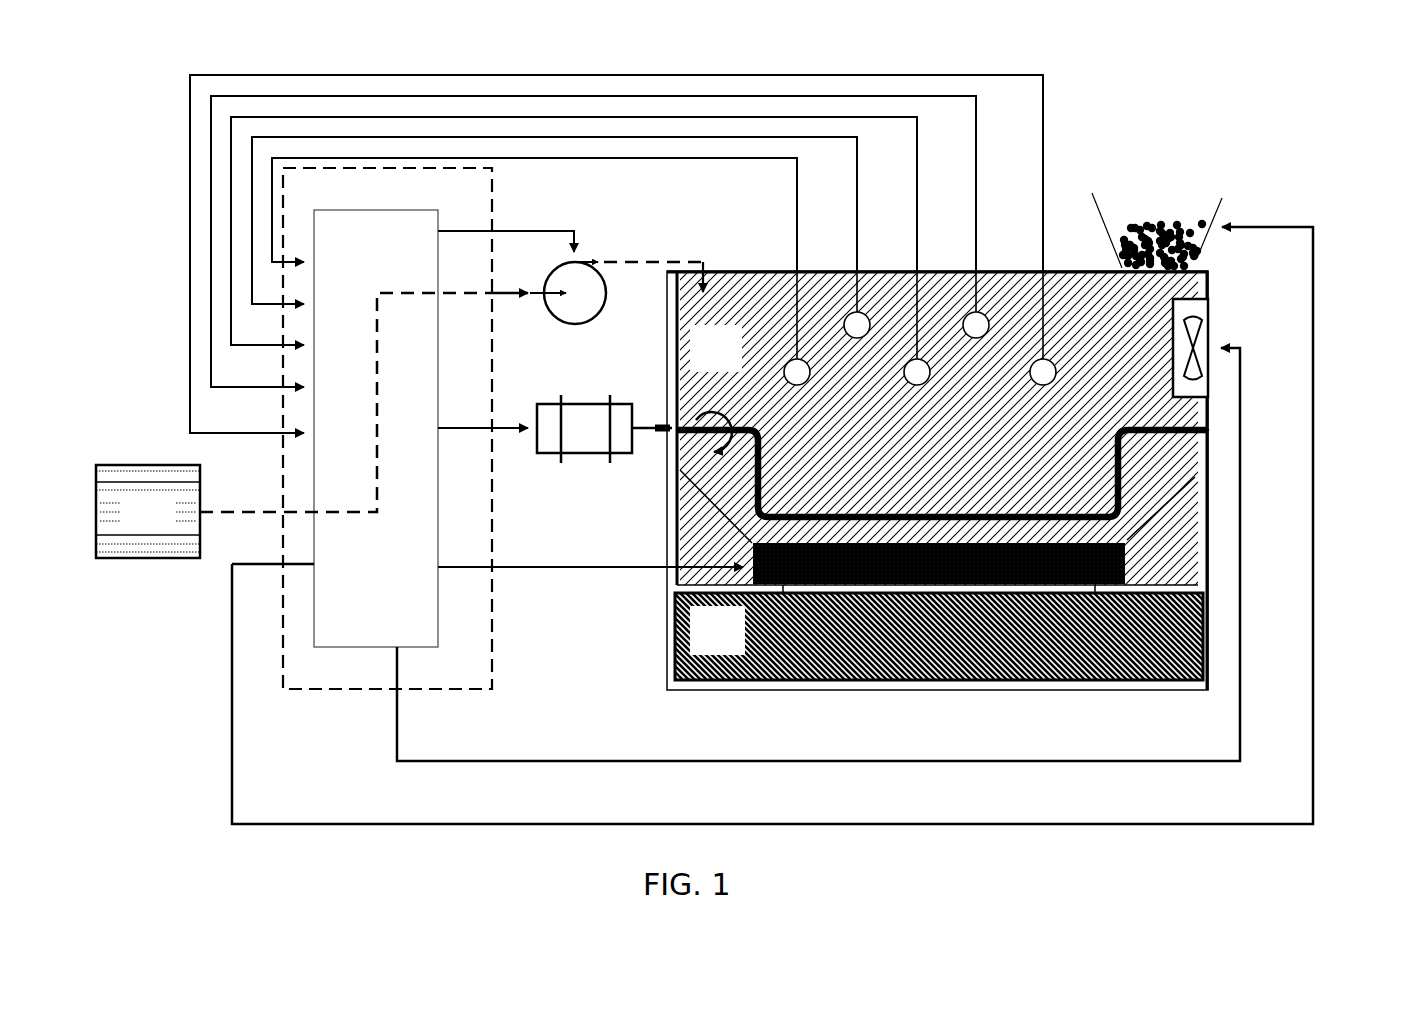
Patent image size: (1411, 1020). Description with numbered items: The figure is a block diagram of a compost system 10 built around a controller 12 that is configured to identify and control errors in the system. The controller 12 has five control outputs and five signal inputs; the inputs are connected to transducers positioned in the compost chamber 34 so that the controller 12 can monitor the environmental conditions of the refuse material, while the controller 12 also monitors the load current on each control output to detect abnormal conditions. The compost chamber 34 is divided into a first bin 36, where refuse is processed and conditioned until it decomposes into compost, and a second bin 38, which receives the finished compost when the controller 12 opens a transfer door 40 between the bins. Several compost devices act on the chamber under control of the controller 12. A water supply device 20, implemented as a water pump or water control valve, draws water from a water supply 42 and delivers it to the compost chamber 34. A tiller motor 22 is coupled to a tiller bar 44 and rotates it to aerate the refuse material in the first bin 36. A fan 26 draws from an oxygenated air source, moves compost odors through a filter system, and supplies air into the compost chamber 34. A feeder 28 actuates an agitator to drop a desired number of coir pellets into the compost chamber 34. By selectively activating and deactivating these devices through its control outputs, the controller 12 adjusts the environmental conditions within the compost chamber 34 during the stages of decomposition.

The compost system 10 is at (1154, 85).
The controller 12 is at (358, 168).
The water supply device 20 is at (580, 262).
The tiller motor 22 is at (580, 404).
The fan 26 is at (1200, 312).
The feeder 28 is at (1198, 193).
The compost chamber 34 is at (1073, 271).
The first bin 36 is at (937, 476).
The second bin 38 is at (939, 636).
The transfer door 40 is at (1205, 602).
The water supply 42 is at (148, 465).
The tiller bar 44 is at (655, 440).